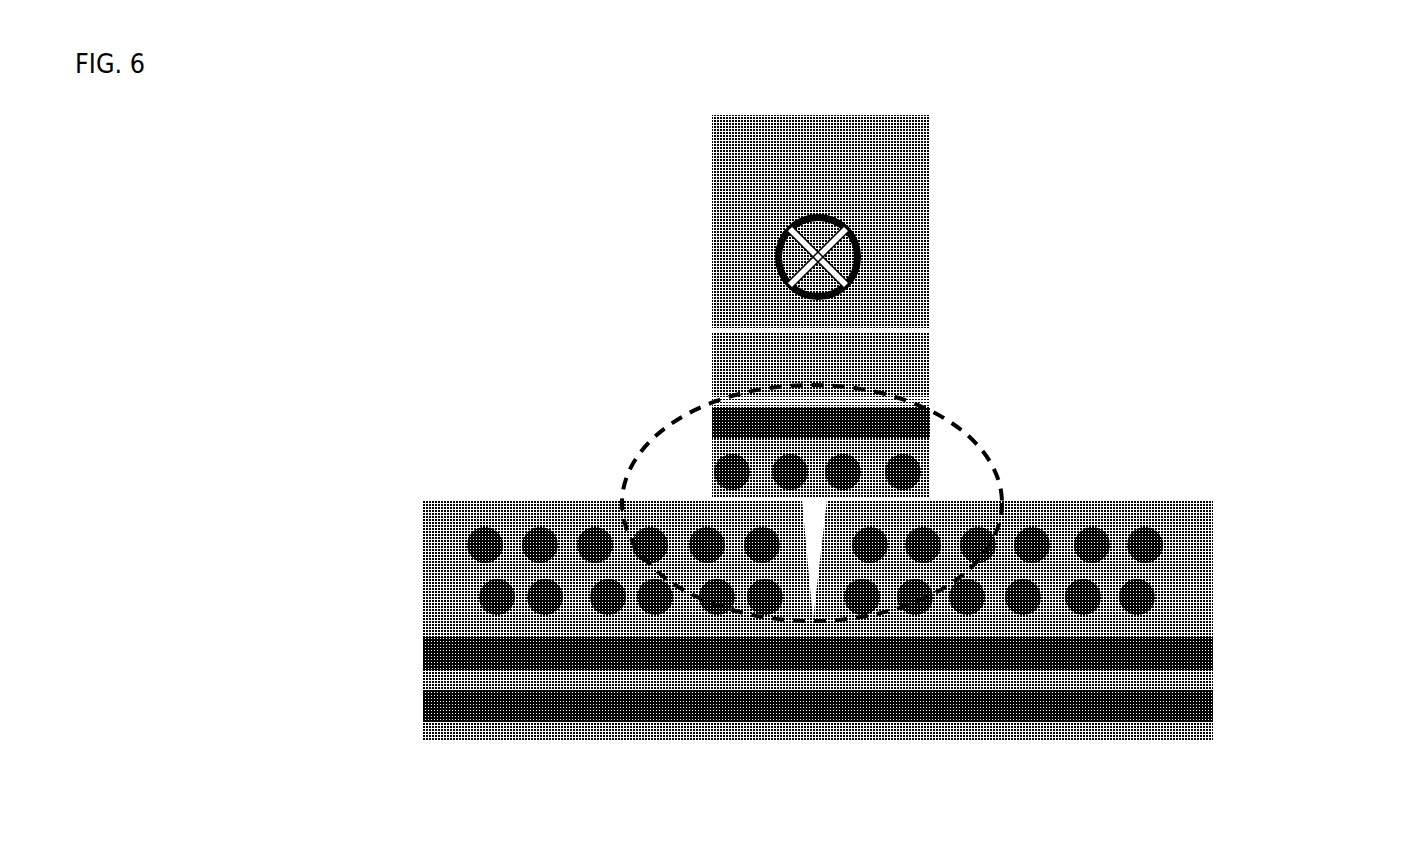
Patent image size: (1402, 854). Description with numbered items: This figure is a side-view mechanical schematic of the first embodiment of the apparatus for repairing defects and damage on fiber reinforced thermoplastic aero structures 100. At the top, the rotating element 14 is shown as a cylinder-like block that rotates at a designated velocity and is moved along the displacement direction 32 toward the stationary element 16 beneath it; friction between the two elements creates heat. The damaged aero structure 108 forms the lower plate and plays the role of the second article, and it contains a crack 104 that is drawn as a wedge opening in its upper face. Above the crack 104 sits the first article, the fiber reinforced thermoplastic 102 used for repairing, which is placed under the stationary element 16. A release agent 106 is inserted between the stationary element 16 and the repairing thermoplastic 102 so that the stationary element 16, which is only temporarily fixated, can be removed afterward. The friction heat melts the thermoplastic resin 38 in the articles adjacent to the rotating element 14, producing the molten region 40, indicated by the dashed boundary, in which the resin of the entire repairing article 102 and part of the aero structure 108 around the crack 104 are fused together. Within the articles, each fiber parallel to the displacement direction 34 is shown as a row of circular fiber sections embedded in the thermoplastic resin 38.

The apparatus for repairing defects and damage on fiber reinforced thermoplastic aer 100 is at (453, 212).
The rotating element 14 is at (821, 221).
The stationary element 16 is at (821, 364).
The displacement direction 32 is at (873, 250).
The molten region 40 is at (935, 408).
The fiber parallel to displacement direction 34 is at (997, 515).
The thermoplastic resin 38 is at (1063, 525).
The release agent 106 is at (708, 390).
The crack 104 is at (810, 532).
The fiber reinforced thermoplastic for repairing 102 is at (707, 478).
The fiber reinforced thermoplastic aero structure 108 is at (908, 547).